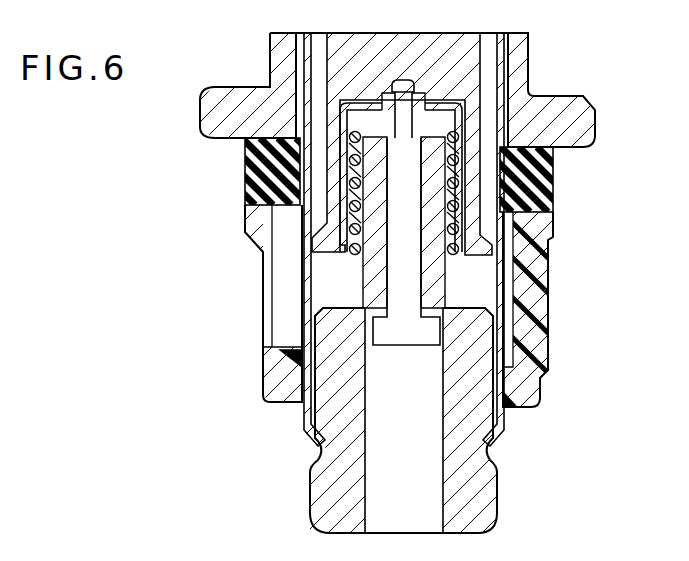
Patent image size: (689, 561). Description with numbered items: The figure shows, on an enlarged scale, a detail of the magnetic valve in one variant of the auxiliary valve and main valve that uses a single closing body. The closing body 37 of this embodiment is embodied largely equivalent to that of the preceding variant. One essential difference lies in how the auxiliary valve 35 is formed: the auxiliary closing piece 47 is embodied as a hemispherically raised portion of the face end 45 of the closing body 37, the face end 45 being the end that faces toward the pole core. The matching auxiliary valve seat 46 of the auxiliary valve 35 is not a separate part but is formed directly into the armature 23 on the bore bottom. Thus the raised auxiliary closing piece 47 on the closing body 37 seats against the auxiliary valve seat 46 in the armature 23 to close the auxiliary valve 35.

The armature 23 is at (445, 55).
The auxiliary valve 35 is at (411, 78).
The closing body 37 is at (347, 219).
The face end 45 is at (463, 97).
The auxiliary valve seat 46 is at (425, 100).
The auxiliary closing piece 47 is at (387, 100).